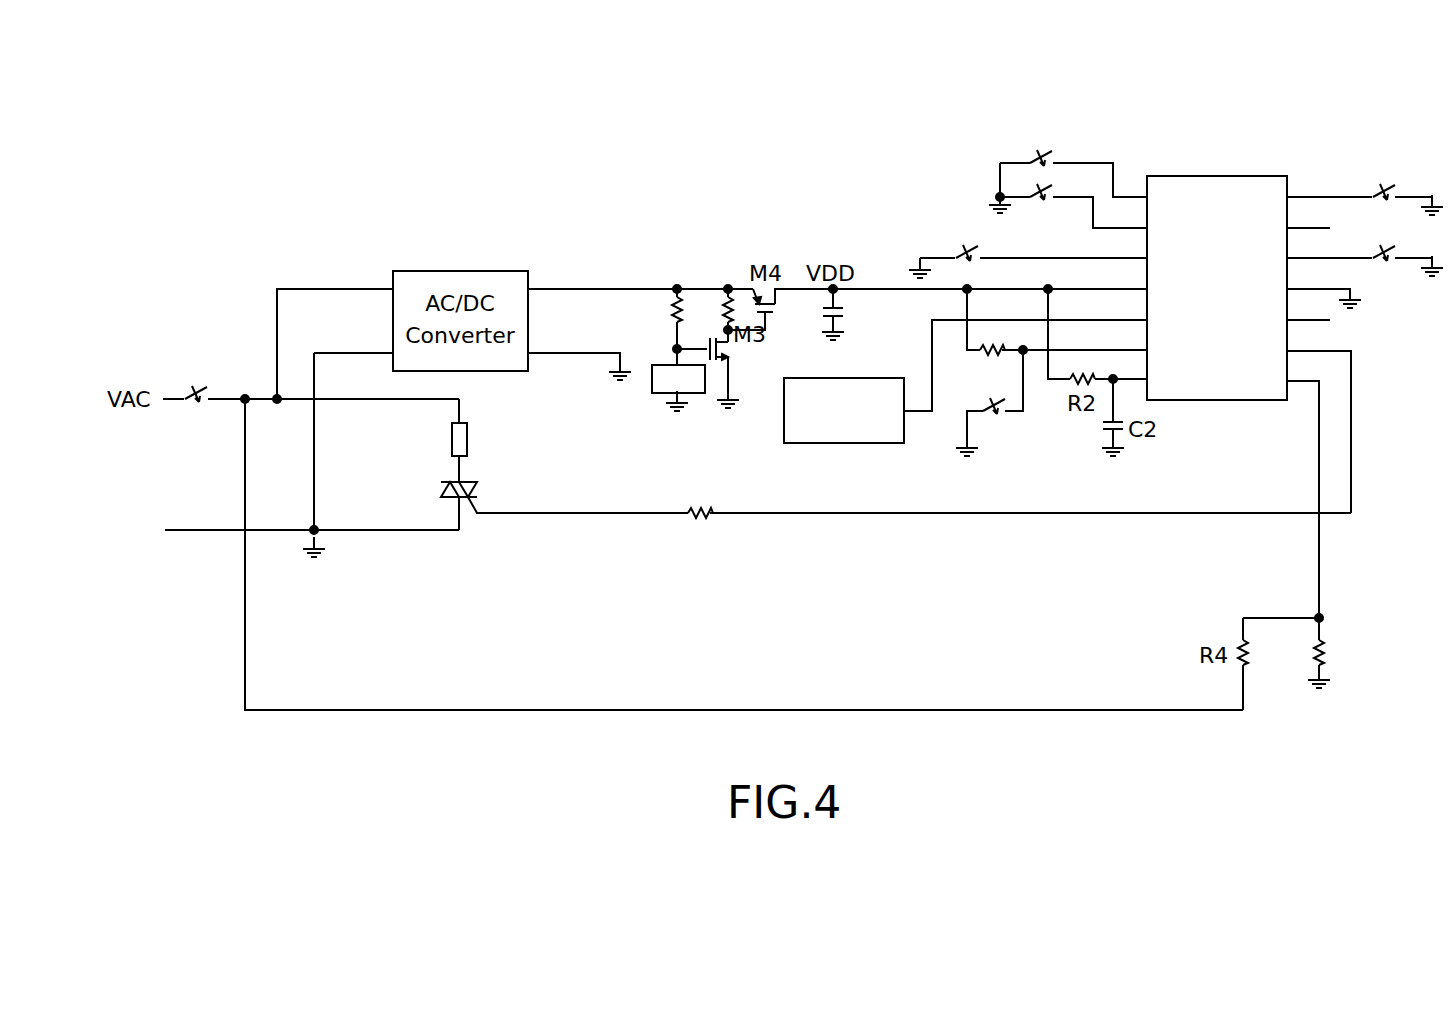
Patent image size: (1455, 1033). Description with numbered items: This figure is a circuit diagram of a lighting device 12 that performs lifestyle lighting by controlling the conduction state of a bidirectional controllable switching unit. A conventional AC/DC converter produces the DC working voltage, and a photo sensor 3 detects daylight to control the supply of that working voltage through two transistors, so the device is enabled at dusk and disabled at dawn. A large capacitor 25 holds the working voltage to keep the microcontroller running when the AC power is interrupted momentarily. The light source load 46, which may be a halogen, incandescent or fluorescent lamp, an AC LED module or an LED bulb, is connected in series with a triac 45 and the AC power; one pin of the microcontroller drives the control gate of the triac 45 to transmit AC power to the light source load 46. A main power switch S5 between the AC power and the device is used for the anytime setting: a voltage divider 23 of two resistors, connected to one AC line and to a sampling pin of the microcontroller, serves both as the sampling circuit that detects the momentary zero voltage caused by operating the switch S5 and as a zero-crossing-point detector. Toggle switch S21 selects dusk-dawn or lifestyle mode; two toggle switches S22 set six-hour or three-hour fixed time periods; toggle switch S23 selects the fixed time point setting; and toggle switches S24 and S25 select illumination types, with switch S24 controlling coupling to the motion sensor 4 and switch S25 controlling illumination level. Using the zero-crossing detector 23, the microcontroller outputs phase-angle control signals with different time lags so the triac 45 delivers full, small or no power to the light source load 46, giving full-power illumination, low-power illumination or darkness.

The lighting device 12 is at (312, 214).
The photo sensor CDS 3 is at (693, 393).
The motion sensor 4 is at (880, 378).
The sampling circuit / voltage divider 23 is at (1333, 645).
The capacitor EC 25 is at (820, 312).
The triac Tr 45 is at (467, 513).
The light source load 46 is at (470, 440).
The main power switch S5 is at (190, 375).
The toggle switch (external control means) S21 is at (1003, 420).
The toggle switches (6H/3H) S22 is at (1032, 140).
The toggle switch (fixed time point setting) S23 is at (958, 235).
The toggle switch (motion sensor coupling) S24 is at (1390, 265).
The toggle switch (illumination level) S25 is at (1383, 185).